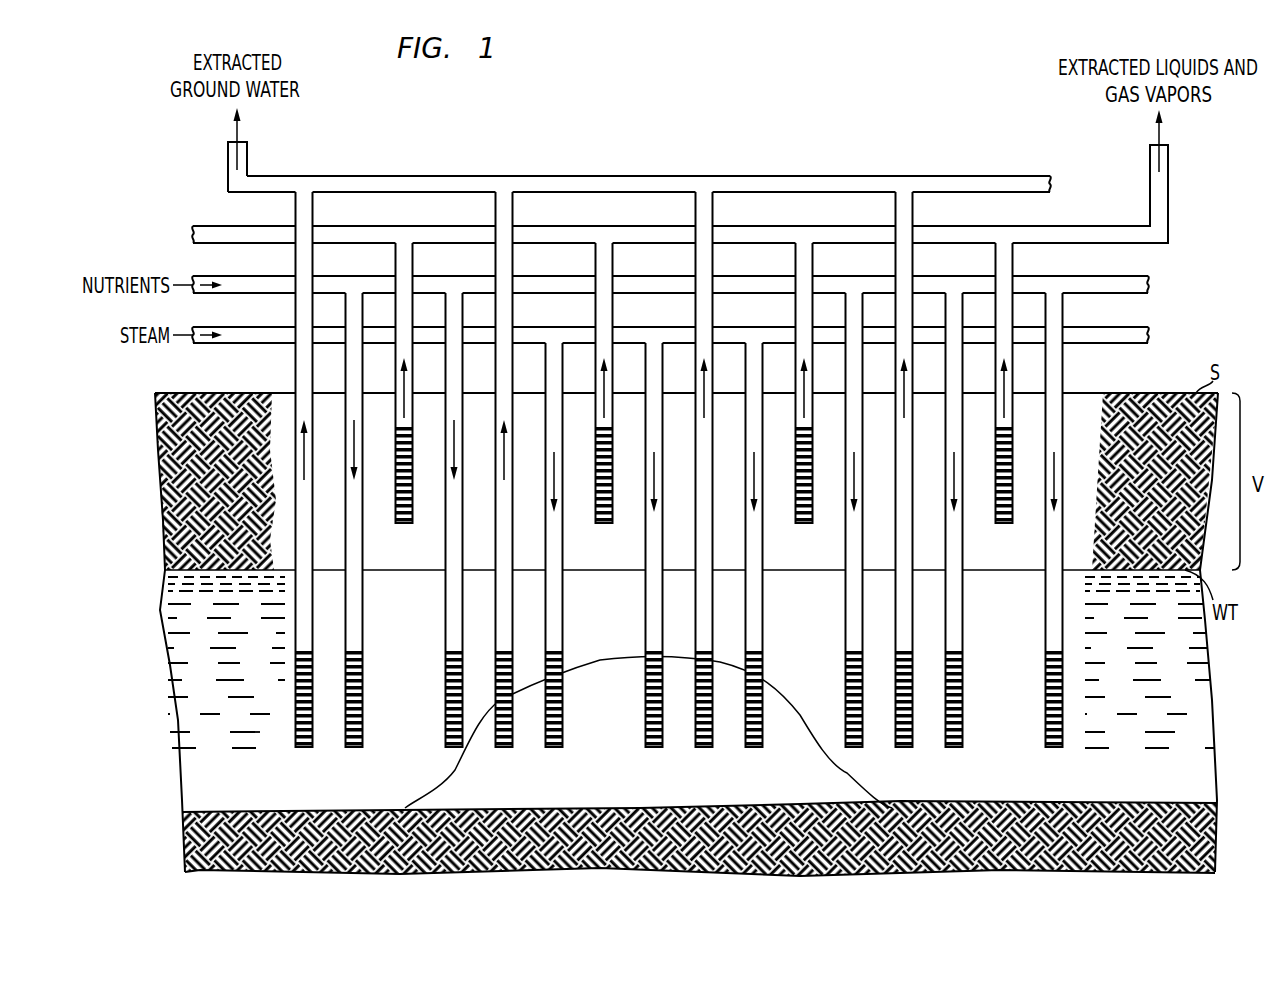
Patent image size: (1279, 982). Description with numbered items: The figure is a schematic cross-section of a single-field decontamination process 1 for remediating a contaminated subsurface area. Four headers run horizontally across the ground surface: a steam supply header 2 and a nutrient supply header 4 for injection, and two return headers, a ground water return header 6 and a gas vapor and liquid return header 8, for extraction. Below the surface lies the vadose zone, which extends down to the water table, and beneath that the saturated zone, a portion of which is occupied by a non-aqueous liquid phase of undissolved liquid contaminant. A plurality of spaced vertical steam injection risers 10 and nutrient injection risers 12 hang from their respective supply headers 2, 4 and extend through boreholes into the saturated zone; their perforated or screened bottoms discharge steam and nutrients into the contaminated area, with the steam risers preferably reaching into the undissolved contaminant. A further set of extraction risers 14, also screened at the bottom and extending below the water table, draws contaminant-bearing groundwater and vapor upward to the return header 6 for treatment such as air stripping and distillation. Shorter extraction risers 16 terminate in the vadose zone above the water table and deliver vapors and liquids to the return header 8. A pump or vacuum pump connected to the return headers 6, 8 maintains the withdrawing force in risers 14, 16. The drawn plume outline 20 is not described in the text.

The single-field decontamination process 1 is at (690, 131).
The steam supply header 2 is at (262, 327).
The nutrient supply header 4 is at (260, 277).
The ground water return header 6 is at (228, 150).
The gas vapor and liquid return header 8 is at (1168, 193).
The steam injection risers 10 is at (674, 565).
The nutrient injection risers 12 is at (724, 540).
The extraction risers 14 is at (624, 489).
The vadose zone extraction risers 16 is at (687, 398).
The contaminant plume 20 is at (620, 742).